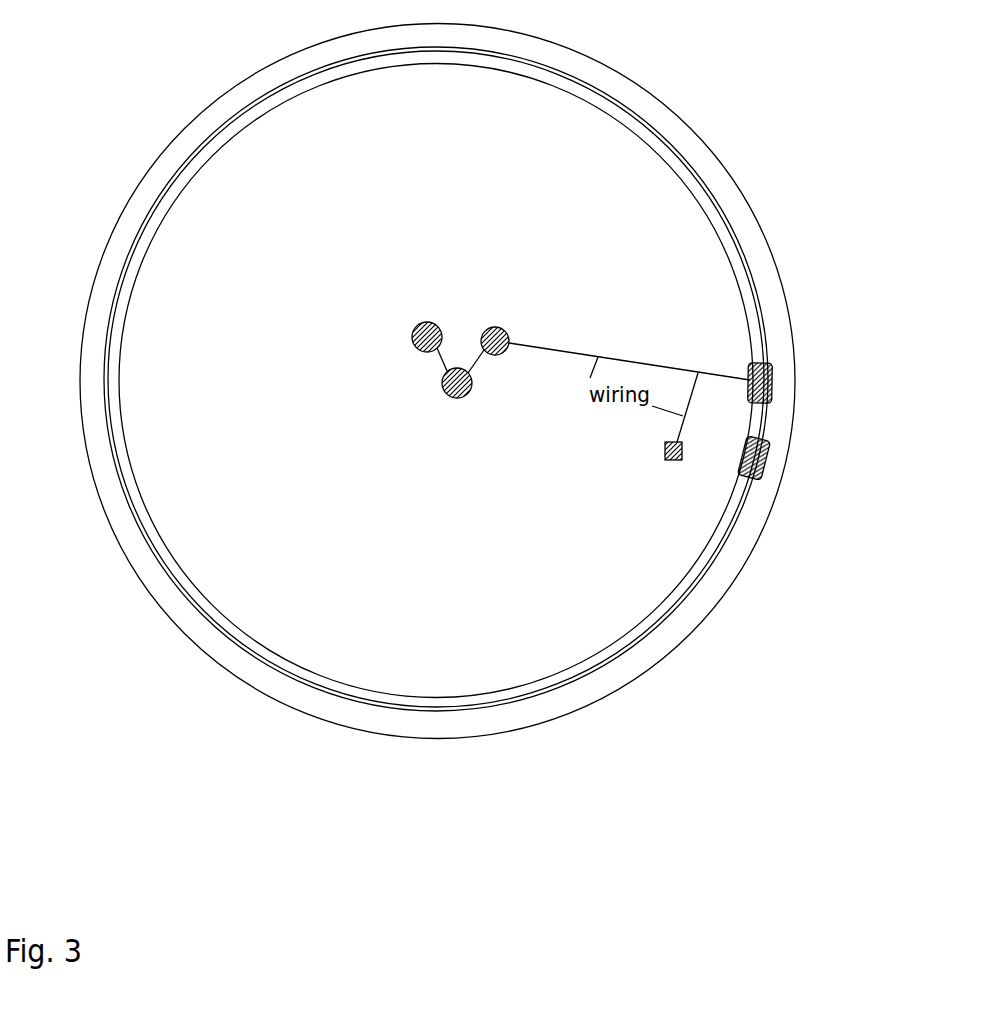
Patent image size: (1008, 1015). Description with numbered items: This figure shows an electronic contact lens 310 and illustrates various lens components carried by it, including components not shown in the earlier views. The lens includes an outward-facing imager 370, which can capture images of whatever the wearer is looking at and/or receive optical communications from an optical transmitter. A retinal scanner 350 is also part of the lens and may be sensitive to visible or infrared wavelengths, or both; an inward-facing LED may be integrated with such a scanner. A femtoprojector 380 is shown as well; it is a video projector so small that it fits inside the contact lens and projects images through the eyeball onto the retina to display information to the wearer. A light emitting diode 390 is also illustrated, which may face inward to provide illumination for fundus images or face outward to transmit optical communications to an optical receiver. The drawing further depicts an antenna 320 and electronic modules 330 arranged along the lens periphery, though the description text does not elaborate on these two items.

The electronic contact lens 310 is at (218, 95).
The antenna 320 is at (555, 95).
The electronic modules 330 is at (767, 460).
The retinal scanner 350 is at (502, 326).
The outward-facing imager 370 is at (449, 398).
The femtoprojector 380 is at (416, 323).
The light emitting diode (LED) 390 is at (666, 463).